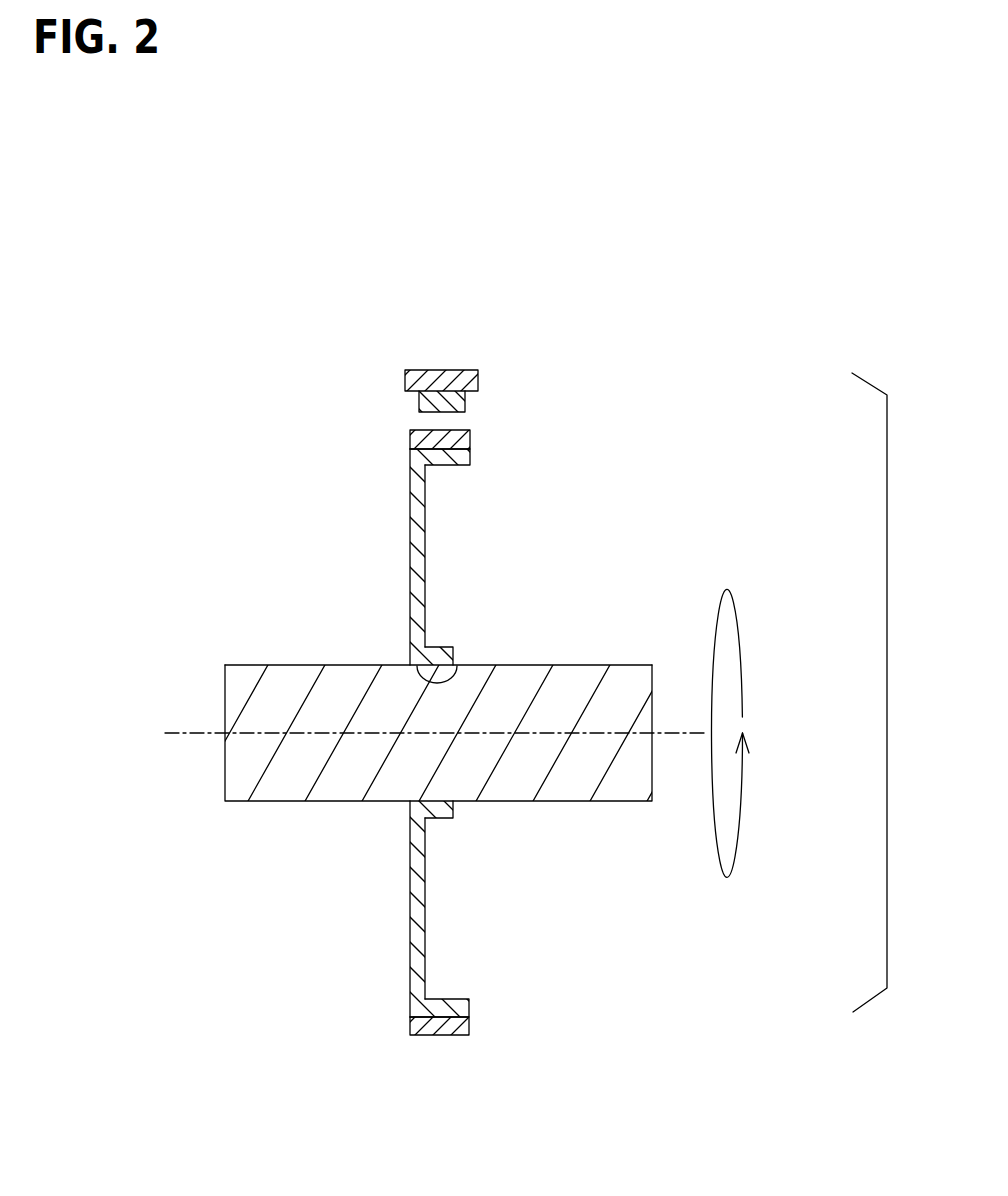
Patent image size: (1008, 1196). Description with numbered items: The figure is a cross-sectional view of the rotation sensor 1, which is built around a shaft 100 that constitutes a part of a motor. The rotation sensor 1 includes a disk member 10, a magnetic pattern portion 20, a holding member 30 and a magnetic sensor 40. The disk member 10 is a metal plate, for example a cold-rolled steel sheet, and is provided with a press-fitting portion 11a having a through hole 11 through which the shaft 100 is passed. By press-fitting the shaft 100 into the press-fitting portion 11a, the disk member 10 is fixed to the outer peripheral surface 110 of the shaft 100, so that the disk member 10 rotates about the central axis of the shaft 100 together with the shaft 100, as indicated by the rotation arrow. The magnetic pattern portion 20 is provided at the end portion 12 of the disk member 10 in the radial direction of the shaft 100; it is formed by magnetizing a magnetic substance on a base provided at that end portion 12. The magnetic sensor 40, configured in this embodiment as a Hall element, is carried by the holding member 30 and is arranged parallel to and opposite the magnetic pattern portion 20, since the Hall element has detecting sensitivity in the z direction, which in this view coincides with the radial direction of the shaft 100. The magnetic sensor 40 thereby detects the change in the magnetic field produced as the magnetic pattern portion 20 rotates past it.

The rotation sensor 1 is at (504, 700).
The disk member 10 is at (411, 537).
The through hole 11 is at (462, 664).
The press-fitting portion 11a is at (440, 647).
The end portion 12 is at (450, 458).
The magnetic pattern portion 20 is at (470, 438).
The holding member 30 is at (455, 368).
The magnetic sensor 40 is at (466, 398).
The shaft 100 is at (253, 700).
The outer peripheral surface 110 is at (287, 663).